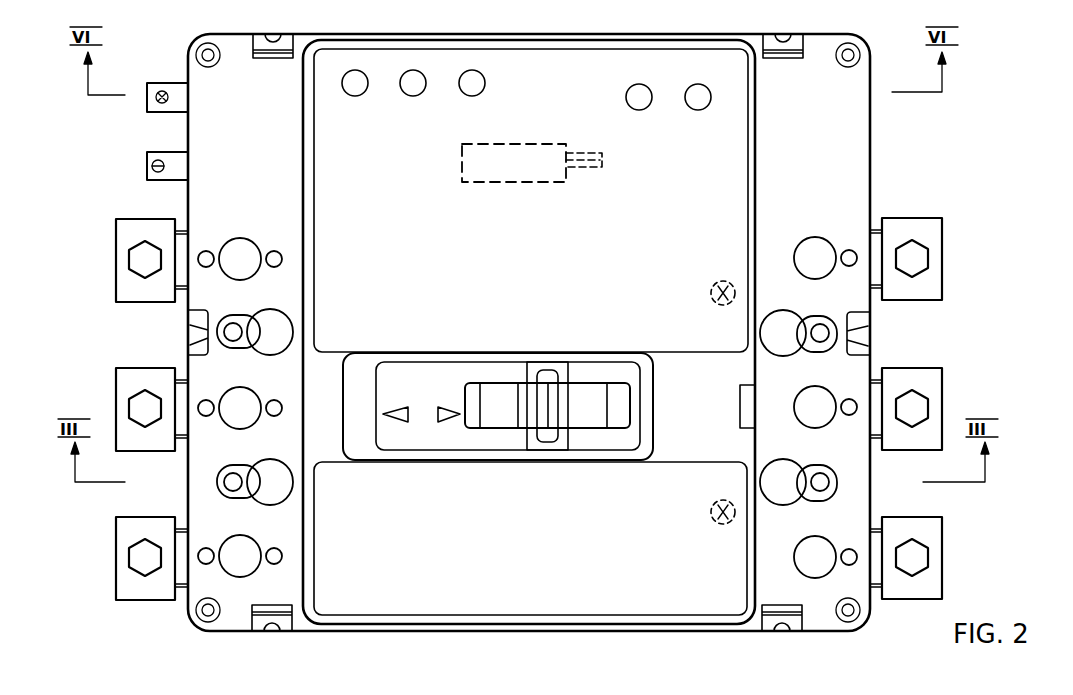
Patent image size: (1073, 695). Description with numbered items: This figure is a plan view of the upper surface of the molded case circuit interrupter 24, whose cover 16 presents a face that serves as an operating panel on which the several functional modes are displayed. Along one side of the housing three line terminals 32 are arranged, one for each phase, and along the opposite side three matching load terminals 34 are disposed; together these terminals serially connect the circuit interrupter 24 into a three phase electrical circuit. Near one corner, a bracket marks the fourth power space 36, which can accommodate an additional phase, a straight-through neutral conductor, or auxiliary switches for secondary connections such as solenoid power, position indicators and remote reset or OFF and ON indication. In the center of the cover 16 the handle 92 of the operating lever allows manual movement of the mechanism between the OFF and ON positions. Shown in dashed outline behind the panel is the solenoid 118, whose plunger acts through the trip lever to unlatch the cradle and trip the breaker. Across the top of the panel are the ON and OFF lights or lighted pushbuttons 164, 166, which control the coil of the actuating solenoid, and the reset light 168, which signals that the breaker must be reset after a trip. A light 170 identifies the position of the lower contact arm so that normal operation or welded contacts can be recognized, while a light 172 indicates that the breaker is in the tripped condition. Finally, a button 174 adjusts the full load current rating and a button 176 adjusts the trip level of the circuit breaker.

The front cover 16 is at (673, 630).
The molded case circuit interrupter 24 is at (938, 156).
The line terminal 32 is at (120, 288).
The load terminal 34 is at (935, 284).
The fourth power space 36 is at (147, 100).
The handle 92 is at (500, 398).
The solenoid 118 is at (507, 182).
The lighted pushbutton 164 is at (357, 96).
The lighted pushbutton 166 is at (406, 95).
The reset light 168 is at (470, 96).
The light 170 is at (635, 109).
The light 172 is at (694, 85).
The button 174 is at (712, 297).
The button 176 is at (712, 521).